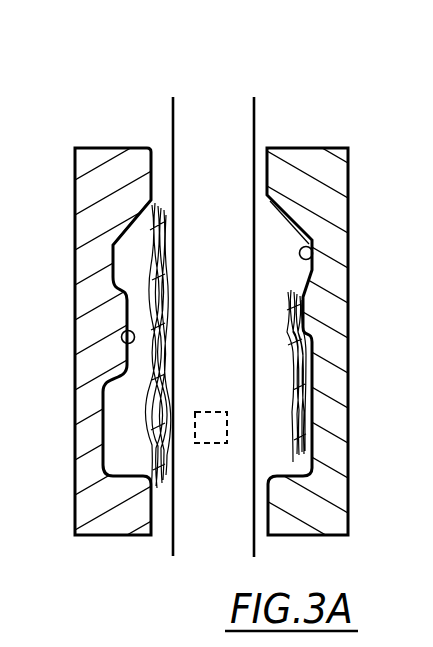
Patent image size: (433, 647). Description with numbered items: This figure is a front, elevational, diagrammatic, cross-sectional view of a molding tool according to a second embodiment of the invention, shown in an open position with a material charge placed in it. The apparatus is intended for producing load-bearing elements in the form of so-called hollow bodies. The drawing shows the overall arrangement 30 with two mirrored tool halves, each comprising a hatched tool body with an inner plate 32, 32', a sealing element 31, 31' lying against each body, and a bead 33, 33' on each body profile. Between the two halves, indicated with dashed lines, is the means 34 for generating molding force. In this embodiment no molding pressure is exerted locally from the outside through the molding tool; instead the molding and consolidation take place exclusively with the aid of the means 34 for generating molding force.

The seal assembly 30 is at (227, 294).
The sealing element 31 is at (99, 346).
The sealing element 31' is at (354, 376).
The plate 32 is at (125, 306).
The plate 32' is at (278, 306).
The bead 33 is at (82, 307).
The bead 33' is at (364, 236).
The means for generating molding force 34 is at (215, 447).